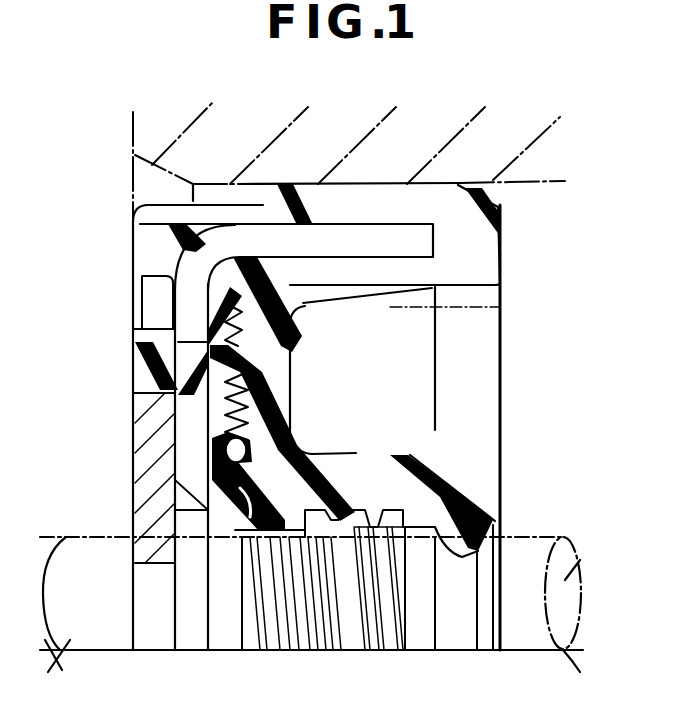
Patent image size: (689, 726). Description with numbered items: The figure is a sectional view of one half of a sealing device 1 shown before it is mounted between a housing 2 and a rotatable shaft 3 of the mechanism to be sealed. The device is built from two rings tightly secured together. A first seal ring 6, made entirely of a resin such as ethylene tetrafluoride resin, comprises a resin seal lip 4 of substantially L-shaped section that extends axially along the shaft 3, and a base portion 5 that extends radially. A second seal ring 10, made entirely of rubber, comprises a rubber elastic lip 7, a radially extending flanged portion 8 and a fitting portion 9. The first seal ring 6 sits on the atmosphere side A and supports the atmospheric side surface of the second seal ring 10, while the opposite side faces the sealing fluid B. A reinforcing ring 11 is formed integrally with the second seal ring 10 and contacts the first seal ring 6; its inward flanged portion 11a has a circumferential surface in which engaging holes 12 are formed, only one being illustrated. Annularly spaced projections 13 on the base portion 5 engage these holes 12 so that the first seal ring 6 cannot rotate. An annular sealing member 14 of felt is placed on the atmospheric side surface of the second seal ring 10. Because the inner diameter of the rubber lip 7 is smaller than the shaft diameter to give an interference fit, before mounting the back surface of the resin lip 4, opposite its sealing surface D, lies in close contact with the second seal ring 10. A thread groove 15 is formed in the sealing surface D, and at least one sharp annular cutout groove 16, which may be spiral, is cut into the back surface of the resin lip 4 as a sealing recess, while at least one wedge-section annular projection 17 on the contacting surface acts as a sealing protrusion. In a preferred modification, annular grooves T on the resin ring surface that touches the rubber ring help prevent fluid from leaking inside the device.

The sealing device 1 is at (522, 246).
The housing 2 is at (146, 150).
The rotatable shaft 3 is at (585, 562).
The resin seal lip 4 is at (405, 512).
The base portion 5 is at (270, 408).
The first seal ring 6 is at (197, 312).
The rubber elastic lip 7 is at (468, 513).
The sealing lip body 8 is at (268, 368).
The fitting portion 9 is at (333, 295).
The second seal ring 10 is at (478, 290).
The reinforcing ring 11 is at (348, 237).
The inward flanged portion 11a is at (187, 432).
The engaging holes 12 is at (178, 352).
The projections 13 is at (134, 383).
The annular sealing member 14 is at (152, 483).
The thread groove 15 is at (262, 628).
The cutout groove 16 is at (368, 538).
The annular projection 17 is at (300, 508).
The atmosphere side A is at (56, 426).
The sealing fluid side B is at (579, 382).
The annular grooves T is at (208, 457).
The sealing surface D is at (290, 556).